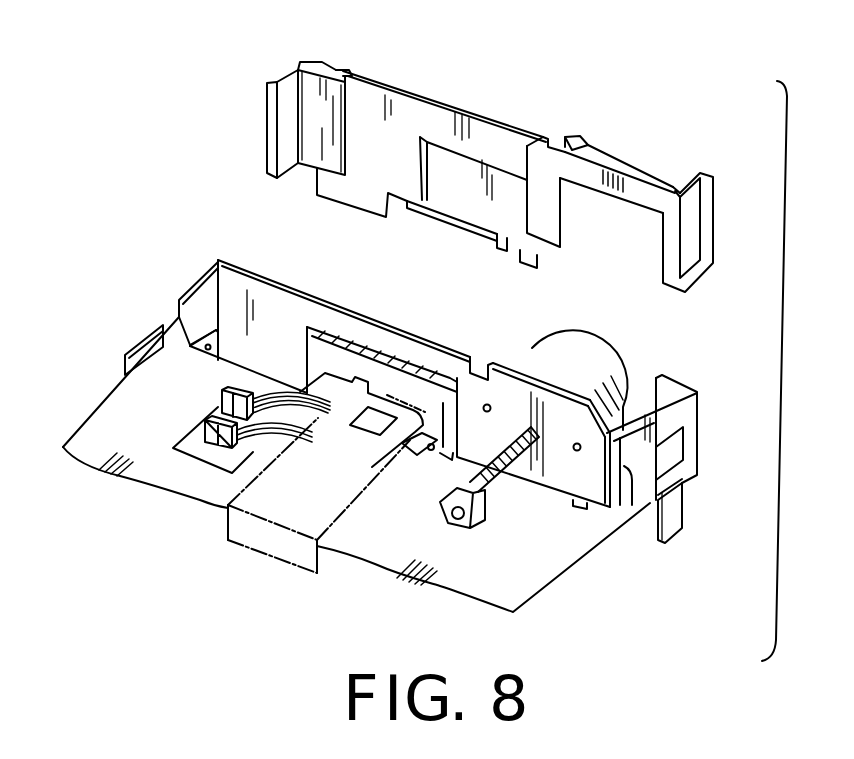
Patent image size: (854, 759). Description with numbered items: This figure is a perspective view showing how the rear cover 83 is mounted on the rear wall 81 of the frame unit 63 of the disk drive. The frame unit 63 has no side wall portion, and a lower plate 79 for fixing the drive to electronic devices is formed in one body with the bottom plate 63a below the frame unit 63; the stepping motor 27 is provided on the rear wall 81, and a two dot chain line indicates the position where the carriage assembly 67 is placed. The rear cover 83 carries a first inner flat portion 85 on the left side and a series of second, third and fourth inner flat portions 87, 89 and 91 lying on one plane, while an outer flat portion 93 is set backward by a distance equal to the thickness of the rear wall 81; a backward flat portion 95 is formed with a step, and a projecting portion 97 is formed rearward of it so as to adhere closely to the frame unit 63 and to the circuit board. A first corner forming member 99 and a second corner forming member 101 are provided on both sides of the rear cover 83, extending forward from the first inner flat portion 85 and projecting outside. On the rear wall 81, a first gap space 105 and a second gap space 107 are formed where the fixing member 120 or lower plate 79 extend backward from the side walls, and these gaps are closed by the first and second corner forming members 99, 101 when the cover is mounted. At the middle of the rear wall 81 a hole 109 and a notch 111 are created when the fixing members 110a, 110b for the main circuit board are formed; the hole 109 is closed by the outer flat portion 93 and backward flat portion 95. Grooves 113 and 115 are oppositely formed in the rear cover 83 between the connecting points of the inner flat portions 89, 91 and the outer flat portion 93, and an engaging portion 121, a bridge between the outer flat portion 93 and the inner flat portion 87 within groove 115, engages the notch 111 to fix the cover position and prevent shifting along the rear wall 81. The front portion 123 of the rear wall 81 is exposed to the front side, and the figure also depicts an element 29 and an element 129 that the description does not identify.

The stepping motor 27 is at (567, 349).
The screw 29 is at (503, 490).
The frame unit 63 is at (550, 588).
The bottom plate 63a is at (111, 394).
The carriage assembly 67 is at (236, 525).
The lower plate 79 is at (197, 291).
The rear wall 81 is at (282, 312).
The rear cover 83 is at (450, 100).
The first inner flat portion 85 is at (312, 61).
The second inner flat portion 87 is at (584, 145).
The third inner flat portion 89 is at (615, 174).
The fourth inner flat portion 91 is at (673, 186).
The outer flat portion 93 is at (430, 93).
The backward flat portion 95 is at (476, 180).
The projecting portion 97 is at (442, 221).
The first corner forming member 99 is at (277, 77).
The second corner forming member 101 is at (707, 174).
The first gap space 105 is at (210, 299).
The second gap space 107 is at (640, 400).
The hole 109 is at (314, 361).
The fixing member 110a is at (439, 413).
The fixing member 110b is at (373, 389).
The notch 111 is at (482, 364).
The groove 113 is at (346, 71).
The groove 115 is at (546, 139).
The fixing member 120 is at (202, 338).
The engaging portion 121 is at (567, 144).
The front portion 123 is at (583, 390).
The tab 129 is at (698, 410).